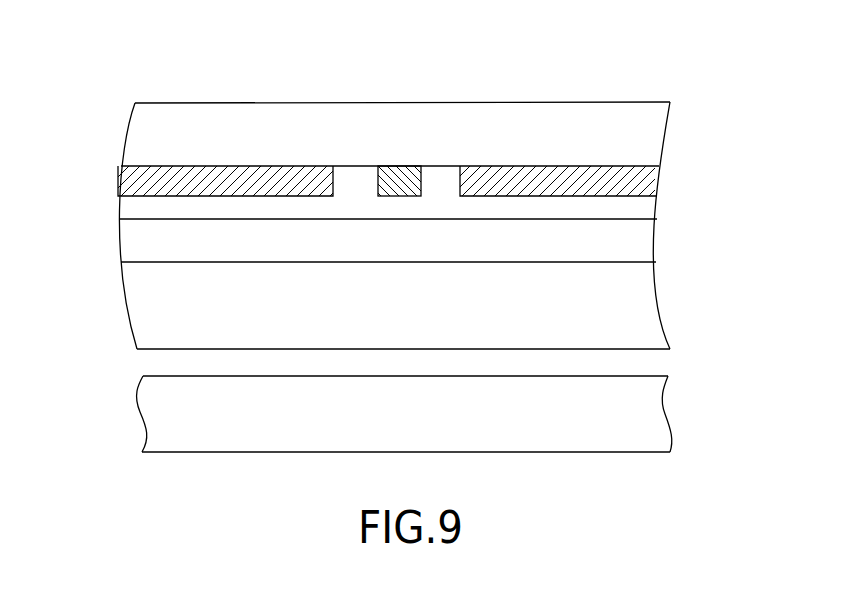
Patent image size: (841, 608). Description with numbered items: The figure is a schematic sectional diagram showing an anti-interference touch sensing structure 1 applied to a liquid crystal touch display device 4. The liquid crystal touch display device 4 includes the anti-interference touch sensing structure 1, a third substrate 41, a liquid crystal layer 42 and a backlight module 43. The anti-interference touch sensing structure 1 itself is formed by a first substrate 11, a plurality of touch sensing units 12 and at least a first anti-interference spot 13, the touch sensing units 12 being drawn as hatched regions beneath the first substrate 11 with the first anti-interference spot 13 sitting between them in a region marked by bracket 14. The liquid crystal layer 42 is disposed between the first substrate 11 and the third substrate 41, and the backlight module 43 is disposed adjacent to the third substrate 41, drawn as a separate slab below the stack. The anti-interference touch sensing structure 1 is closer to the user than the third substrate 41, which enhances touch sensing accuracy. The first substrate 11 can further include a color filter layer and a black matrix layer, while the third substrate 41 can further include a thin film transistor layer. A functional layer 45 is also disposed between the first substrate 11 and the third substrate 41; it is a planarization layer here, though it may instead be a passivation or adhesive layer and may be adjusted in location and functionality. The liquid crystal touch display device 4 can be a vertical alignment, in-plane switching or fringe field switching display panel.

The liquid crystal touch display device 4 is at (153, 60).
The anti-interference touch sensing structure 1 is at (572, 98).
The first substrate 11 is at (643, 147).
The touch sensing units 12 is at (253, 178).
The first anti-interference spot 13 is at (398, 188).
The gap region between electrodes 14 is at (458, 153).
The functional layer 45 is at (640, 209).
The liquid crystal layer 42 is at (638, 238).
The third substrate 41 is at (648, 310).
The backlight module 43 is at (645, 415).